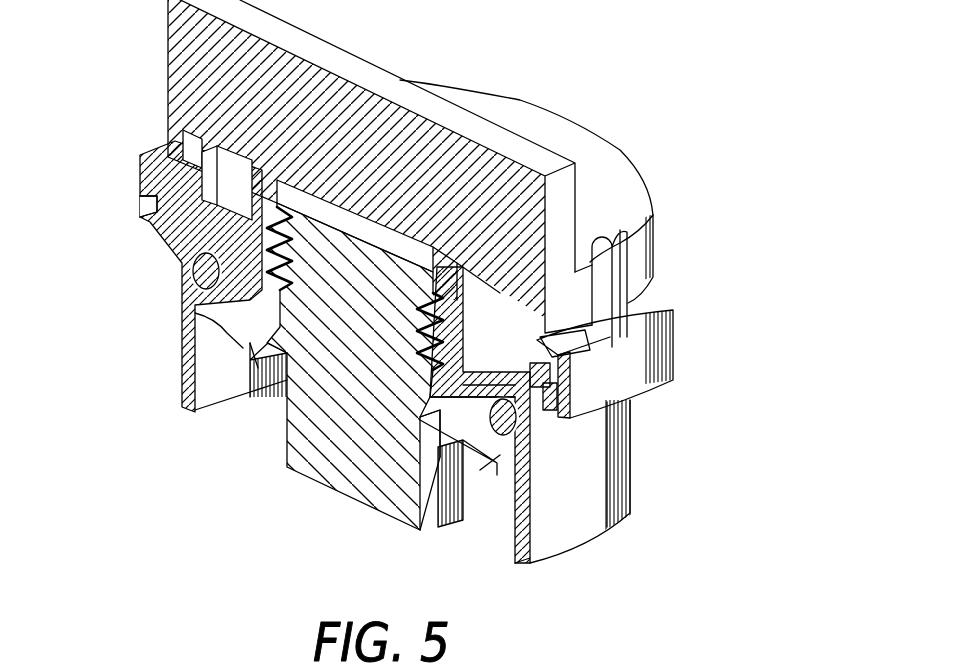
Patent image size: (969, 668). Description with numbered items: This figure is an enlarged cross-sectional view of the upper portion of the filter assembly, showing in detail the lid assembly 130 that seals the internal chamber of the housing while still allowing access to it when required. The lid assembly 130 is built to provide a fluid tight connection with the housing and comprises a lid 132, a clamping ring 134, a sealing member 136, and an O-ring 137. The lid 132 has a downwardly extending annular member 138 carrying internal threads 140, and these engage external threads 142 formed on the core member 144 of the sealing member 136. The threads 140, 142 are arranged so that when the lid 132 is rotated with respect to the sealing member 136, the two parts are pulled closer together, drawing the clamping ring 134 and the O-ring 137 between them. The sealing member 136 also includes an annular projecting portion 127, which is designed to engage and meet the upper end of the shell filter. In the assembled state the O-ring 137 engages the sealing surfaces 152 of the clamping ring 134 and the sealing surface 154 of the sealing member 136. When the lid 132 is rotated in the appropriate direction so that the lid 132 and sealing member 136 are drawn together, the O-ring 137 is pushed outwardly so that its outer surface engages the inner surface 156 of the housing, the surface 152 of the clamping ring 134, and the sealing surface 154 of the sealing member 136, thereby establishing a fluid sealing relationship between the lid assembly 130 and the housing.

The annular projecting portion 127 is at (258, 368).
The lid assembly 130 is at (607, 110).
The lid 132 is at (494, 88).
The clamping ring 134 is at (148, 155).
The sealing member 136 is at (220, 322).
The O-ring 137 is at (195, 283).
The downwardly extending annular member 138 is at (178, 142).
The internal threads 140 is at (140, 207).
The external threads 142 is at (185, 238).
The core member 144 is at (306, 478).
The sealing surfaces 152 is at (530, 414).
The sealing surface 154 is at (440, 445).
The inner surface 156 is at (522, 445).